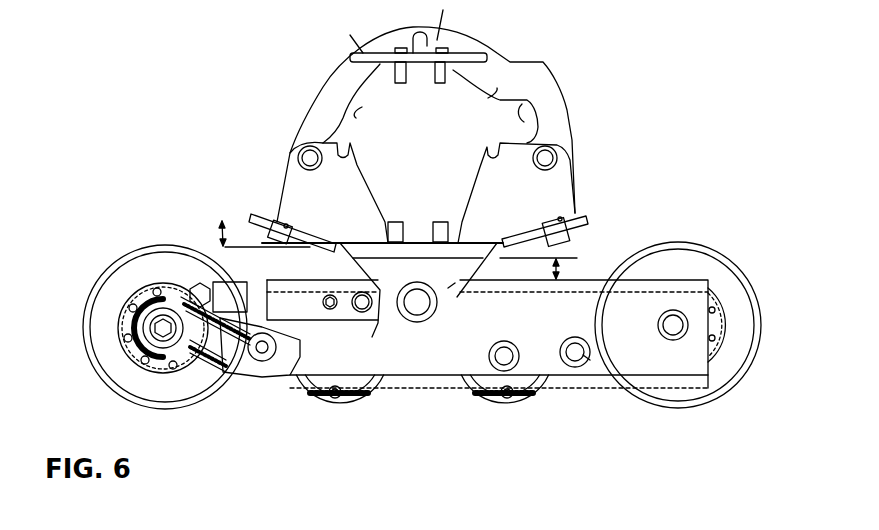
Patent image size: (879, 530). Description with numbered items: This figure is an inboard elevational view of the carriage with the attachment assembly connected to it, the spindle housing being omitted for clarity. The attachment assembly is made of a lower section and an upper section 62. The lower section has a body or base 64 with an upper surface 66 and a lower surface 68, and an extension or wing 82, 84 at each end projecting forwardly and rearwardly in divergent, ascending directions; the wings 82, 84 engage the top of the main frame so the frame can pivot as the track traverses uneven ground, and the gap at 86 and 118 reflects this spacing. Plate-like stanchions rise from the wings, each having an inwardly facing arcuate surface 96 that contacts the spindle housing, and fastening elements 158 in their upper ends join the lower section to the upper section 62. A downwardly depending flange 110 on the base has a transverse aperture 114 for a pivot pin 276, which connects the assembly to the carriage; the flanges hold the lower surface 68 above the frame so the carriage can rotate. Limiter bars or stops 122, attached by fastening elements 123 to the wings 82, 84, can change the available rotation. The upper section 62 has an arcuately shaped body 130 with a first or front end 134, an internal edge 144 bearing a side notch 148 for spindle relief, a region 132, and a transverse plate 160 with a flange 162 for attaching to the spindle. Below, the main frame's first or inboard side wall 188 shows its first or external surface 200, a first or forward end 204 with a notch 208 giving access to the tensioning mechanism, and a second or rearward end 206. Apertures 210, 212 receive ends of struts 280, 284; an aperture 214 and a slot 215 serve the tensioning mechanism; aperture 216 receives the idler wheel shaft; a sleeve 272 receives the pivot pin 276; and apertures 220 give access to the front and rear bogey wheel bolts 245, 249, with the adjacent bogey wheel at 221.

The second or upper section 62 is at (310, 72).
The body or base 64 is at (253, 155).
The upper surface 66 is at (417, 238).
The lower surface 68 is at (345, 265).
The extension or wing 82 is at (283, 223).
The extension or wing 84 is at (580, 223).
The gap dimension 86 is at (218, 233).
The arcuately shaped surface 96 is at (360, 178).
The downwardly depending flange 110 is at (447, 283).
The transverse aperture 114 is at (440, 307).
The gap dimension 118 is at (570, 267).
The limiter bar or stop 122 is at (290, 240).
The fastening element 123 is at (290, 227).
The arcuately shaped body 130 is at (508, 60).
The left arm 132 is at (318, 127).
The first or front end 134 is at (563, 120).
The internal edge 144 is at (425, 104).
The side notch 148 is at (528, 102).
The fastening element 158 is at (306, 152).
The transverse plate 160 is at (341, 32).
The flange 162 is at (483, 52).
The first or inboard side wall 188 is at (557, 380).
The first or external surface 200 is at (480, 363).
The first or forward end 204 is at (303, 393).
The second or rearward end 206 is at (668, 363).
The notch 208 is at (210, 250).
The aperture 210 is at (227, 370).
The aperture 212 is at (573, 337).
The aperture 214 is at (377, 320).
The slot 215 is at (332, 302).
The aperture 216 is at (687, 333).
The aperture 220 is at (350, 368).
The rear roller 221 is at (513, 372).
The front bogey wheel bolt 245 is at (325, 400).
The rear bogey wheel bolt 249 is at (508, 345).
The sleeve 272 is at (412, 340).
The pivot pin 276 is at (428, 317).
The strut 280 is at (257, 363).
The strut 284 is at (583, 355).